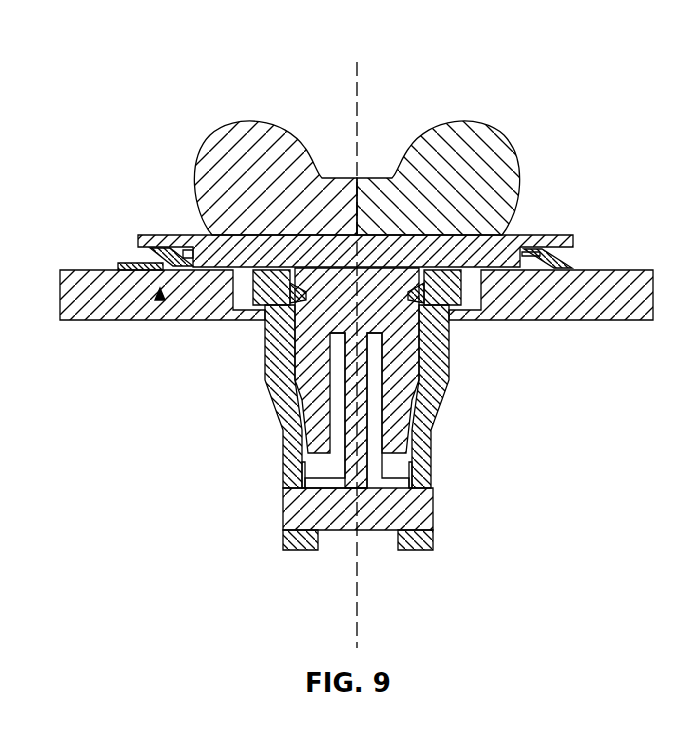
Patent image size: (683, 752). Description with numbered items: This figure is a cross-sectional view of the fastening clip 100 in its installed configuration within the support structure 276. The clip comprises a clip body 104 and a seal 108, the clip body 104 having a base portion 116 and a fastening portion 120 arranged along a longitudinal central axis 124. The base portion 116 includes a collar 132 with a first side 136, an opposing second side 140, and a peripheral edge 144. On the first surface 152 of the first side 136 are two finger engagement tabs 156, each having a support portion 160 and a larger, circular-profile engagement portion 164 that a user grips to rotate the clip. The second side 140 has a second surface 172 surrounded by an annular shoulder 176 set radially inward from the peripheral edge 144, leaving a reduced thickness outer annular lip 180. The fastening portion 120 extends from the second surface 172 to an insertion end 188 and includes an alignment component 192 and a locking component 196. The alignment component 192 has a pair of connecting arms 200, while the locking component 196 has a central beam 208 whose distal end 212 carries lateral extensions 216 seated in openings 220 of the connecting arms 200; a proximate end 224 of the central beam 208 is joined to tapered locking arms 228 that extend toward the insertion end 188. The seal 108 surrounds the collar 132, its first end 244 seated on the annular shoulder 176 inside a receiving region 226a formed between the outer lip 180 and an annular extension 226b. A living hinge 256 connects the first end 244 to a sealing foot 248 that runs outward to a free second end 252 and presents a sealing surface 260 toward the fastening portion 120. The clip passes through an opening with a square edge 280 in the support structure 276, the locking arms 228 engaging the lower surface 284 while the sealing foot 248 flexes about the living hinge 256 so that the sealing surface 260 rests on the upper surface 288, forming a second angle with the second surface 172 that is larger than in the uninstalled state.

The fastening clip 100 is at (75, 100).
The clip body 104 is at (520, 186).
The seal 108 is at (135, 240).
The base portion 116 is at (522, 101).
The fastening portion 120 is at (184, 420).
The central axis 124 is at (363, 84).
The collar 132 is at (507, 234).
The first side 136 is at (179, 137).
The second side 140 is at (175, 322).
The peripheral edge 144 is at (128, 246).
The first surface 152 is at (312, 232).
The finger engagement tabs 156 is at (222, 152).
The support portion 160 is at (336, 182).
The engagement portion 164 is at (258, 138).
The second surface 172 is at (262, 372).
The annular shoulder 176 is at (512, 250).
The reduced thickness outer annular lip 180 is at (140, 322).
The insertion end 188 is at (420, 552).
The alignment component 192 is at (436, 396).
The locking component 196 is at (290, 440).
The connecting arms 200 is at (338, 412).
The central beam 208 is at (303, 470).
The distal end 212 is at (298, 504).
The lateral extensions 216 is at (298, 540).
The openings 220 is at (262, 520).
The proximate end 224 is at (282, 370).
The receiving region 226a is at (162, 249).
The annular extension 226b is at (190, 240).
The locking arms 228 is at (312, 396).
The first end 244 is at (540, 250).
The sealing foot 248 is at (598, 260).
The second end 252 is at (612, 272).
The living hinge 256 is at (562, 252).
The sealing surface 260 is at (604, 322).
The support structure 276 is at (63, 296).
The square edge 280 is at (252, 322).
The lower surface 284 is at (88, 322).
The upper surface 288 is at (122, 266).